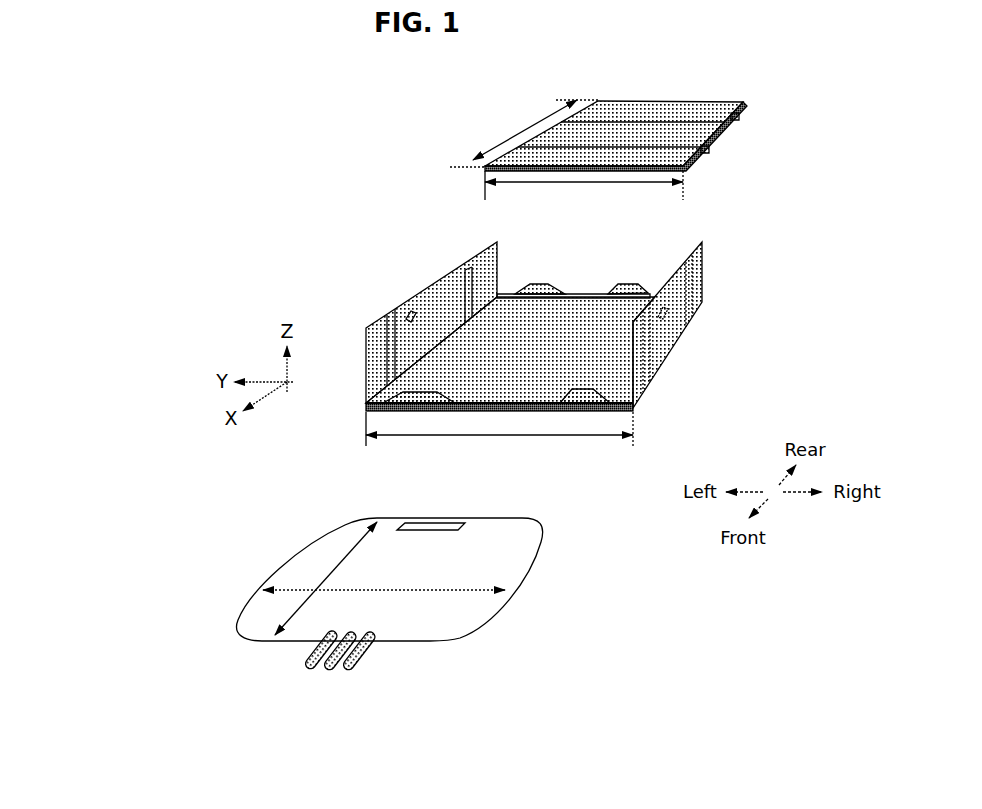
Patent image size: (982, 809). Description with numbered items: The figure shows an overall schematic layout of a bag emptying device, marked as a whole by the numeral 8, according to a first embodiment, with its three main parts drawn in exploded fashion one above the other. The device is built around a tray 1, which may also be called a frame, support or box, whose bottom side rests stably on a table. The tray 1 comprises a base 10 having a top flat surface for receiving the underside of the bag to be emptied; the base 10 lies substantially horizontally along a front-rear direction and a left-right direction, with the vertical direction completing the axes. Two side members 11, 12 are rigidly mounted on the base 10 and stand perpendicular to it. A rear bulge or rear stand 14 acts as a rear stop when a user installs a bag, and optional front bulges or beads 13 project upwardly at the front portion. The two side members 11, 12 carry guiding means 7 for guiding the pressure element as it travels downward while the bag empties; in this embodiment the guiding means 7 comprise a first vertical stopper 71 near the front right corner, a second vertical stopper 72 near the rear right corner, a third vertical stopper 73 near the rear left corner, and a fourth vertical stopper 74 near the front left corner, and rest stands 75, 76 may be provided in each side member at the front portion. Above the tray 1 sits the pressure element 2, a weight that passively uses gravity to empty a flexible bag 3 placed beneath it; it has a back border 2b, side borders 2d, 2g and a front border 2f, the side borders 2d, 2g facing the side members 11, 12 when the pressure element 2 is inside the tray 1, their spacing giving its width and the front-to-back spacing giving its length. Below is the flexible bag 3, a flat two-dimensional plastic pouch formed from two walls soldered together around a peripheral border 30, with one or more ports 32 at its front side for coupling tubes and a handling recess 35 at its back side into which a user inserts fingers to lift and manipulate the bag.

The tray 1 is at (555, 345).
The pressure element 2 is at (620, 132).
The back border 2b is at (663, 100).
The side border 2d is at (718, 141).
The front border 2f is at (593, 157).
The side border 2g is at (591, 108).
The flexible bag 3 is at (405, 579).
The guiding means 7 is at (643, 331).
The dust-proof cover assembly 8 is at (101, 132).
The base 10 is at (572, 317).
The side member 11 is at (707, 325).
The side member 12 is at (412, 317).
The front bulges or beads 13 is at (583, 393).
The rear bulge or rear stand 14 is at (530, 285).
The peripheral border 30 is at (295, 555).
The ports 32 is at (355, 664).
The handling recess 35 is at (450, 518).
The first vertical stopper 71 is at (648, 345).
The second vertical stopper 72 is at (692, 290).
The third vertical stopper 73 is at (468, 268).
The fourth vertical stopper 74 is at (388, 322).
The rest stand 75 is at (410, 308).
The rest stand 76 is at (660, 318).